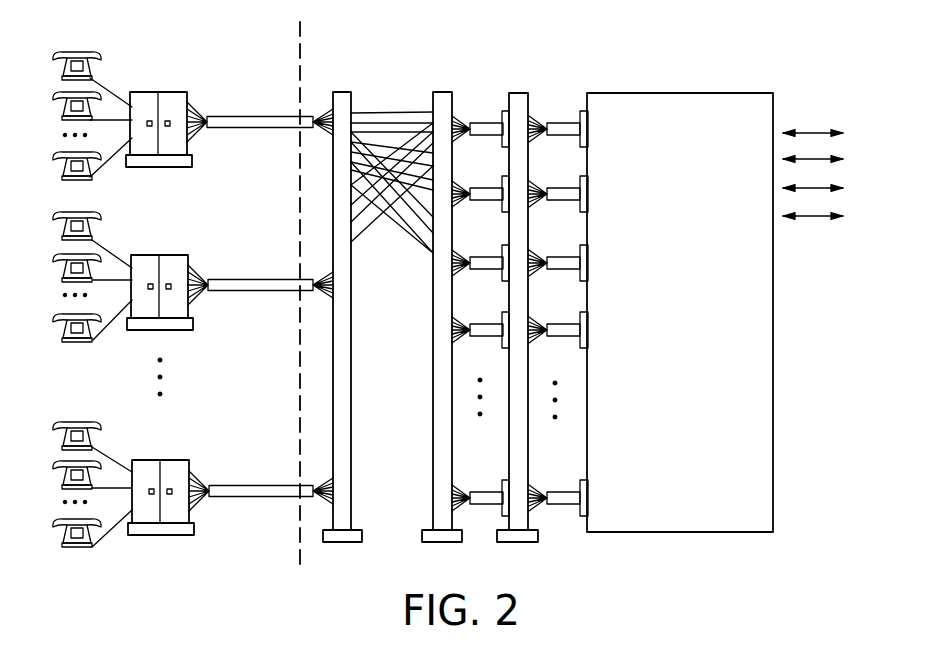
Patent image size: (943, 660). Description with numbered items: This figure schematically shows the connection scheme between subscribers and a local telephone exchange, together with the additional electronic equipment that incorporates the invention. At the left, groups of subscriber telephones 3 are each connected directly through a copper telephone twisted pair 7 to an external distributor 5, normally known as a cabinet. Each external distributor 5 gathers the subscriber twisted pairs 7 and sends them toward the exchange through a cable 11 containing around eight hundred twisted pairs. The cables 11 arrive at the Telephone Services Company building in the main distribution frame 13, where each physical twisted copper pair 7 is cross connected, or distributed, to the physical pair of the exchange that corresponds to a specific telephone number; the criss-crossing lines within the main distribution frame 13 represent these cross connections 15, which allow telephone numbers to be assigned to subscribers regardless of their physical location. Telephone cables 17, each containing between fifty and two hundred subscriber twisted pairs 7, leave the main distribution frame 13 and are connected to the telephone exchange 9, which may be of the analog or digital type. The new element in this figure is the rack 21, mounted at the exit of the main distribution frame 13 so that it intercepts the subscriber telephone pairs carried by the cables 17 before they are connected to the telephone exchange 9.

The subscriber telephone 3 is at (93, 52).
The external distributor 5 is at (188, 100).
The copper telephone twisted pair 7 is at (115, 92).
The telephone exchange 9 is at (697, 92).
The cable 11 is at (278, 117).
The main distribution frame 13 is at (401, 90).
The cross-connection 15 is at (420, 248).
The telephone cable 17 is at (482, 121).
The rack 21 is at (525, 90).